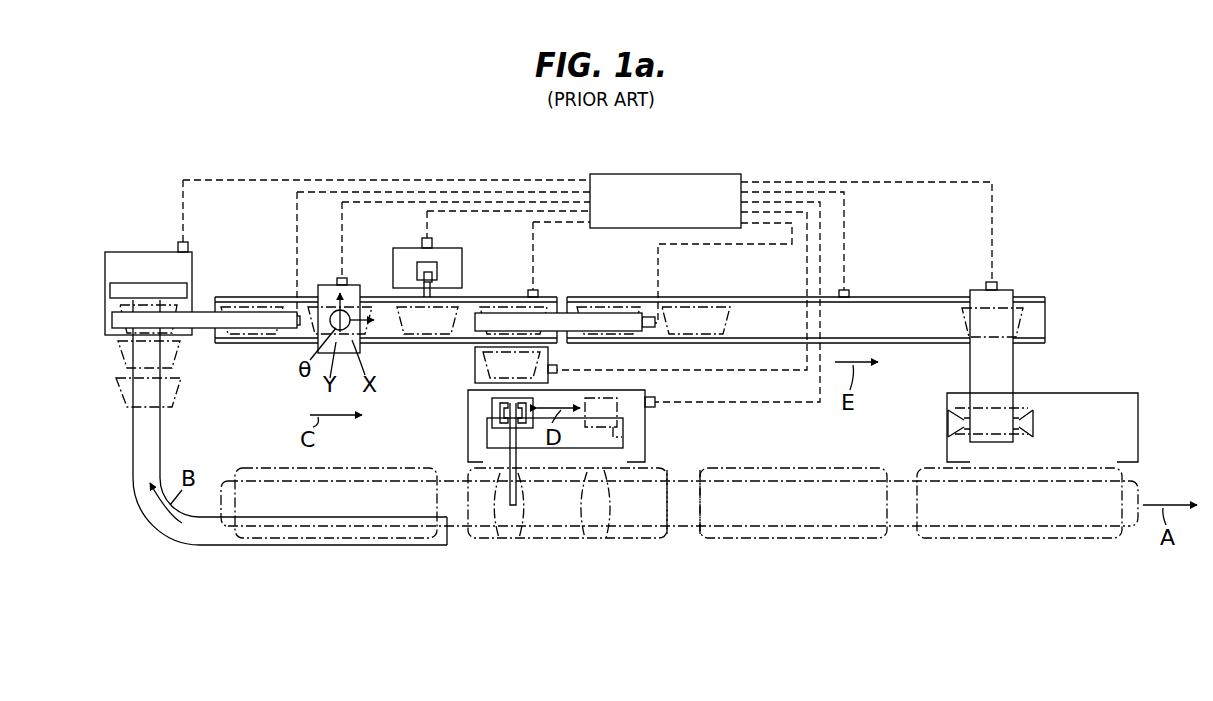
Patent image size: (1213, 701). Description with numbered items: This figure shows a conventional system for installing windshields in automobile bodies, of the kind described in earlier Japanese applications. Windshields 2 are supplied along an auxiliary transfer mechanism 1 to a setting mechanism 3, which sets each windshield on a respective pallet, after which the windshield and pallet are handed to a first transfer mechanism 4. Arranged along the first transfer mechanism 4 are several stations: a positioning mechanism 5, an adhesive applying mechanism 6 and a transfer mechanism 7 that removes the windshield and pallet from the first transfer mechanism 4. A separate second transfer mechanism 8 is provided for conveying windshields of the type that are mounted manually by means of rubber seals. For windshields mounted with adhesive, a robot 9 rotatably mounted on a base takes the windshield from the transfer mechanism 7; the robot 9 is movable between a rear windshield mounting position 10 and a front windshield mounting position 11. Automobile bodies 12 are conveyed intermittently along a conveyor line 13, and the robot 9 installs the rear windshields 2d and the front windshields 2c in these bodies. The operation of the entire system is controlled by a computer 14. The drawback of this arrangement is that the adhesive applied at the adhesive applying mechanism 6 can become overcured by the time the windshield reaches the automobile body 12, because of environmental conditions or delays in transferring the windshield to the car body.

The auxiliary transfer mechanism 1 is at (153, 538).
The windshield 2 is at (118, 380).
The front windshield 2c is at (603, 538).
The rear windshield 2d is at (497, 536).
The setting mechanism 3 is at (106, 258).
The first transfer mechanism 4 is at (262, 355).
The positioning mechanism 5 is at (327, 285).
The adhesive applying mechanism 6 is at (410, 250).
The transfer mechanism 7 is at (499, 296).
The second transfer mechanism 8 is at (921, 296).
The robot 9 is at (492, 407).
The rear windshield mounting position 10 is at (487, 428).
The front windshield mounting position 11 is at (622, 436).
The automobile body 12 is at (336, 540).
The conveyor line 13 is at (690, 540).
The computer 14 is at (699, 175).